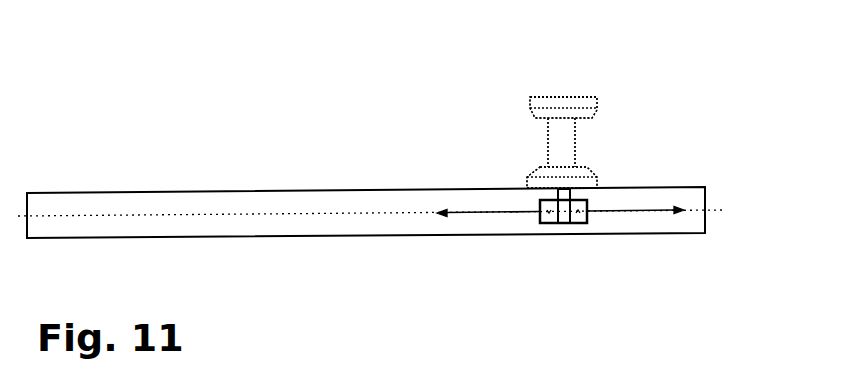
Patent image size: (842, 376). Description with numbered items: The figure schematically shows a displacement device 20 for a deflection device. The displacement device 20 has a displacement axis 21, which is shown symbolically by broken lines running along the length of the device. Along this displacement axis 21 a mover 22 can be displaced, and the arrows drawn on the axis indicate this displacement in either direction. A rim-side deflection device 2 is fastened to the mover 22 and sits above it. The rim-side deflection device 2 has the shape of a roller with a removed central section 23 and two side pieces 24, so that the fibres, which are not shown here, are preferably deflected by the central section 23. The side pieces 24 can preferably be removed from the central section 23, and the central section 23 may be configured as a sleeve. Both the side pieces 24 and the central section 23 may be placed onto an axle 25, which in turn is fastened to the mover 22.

The rim-side deflection device 2 is at (612, 99).
The displacement device 20 is at (58, 180).
The displacement axis 21 is at (308, 222).
The mover 22 is at (572, 240).
The central section 23 is at (590, 135).
The side pieces 24 is at (520, 99).
The axle 25 is at (566, 86).